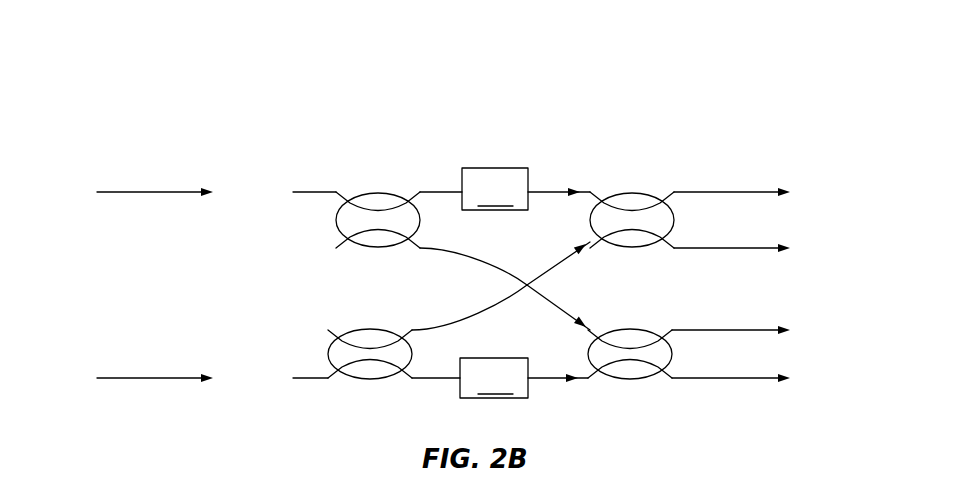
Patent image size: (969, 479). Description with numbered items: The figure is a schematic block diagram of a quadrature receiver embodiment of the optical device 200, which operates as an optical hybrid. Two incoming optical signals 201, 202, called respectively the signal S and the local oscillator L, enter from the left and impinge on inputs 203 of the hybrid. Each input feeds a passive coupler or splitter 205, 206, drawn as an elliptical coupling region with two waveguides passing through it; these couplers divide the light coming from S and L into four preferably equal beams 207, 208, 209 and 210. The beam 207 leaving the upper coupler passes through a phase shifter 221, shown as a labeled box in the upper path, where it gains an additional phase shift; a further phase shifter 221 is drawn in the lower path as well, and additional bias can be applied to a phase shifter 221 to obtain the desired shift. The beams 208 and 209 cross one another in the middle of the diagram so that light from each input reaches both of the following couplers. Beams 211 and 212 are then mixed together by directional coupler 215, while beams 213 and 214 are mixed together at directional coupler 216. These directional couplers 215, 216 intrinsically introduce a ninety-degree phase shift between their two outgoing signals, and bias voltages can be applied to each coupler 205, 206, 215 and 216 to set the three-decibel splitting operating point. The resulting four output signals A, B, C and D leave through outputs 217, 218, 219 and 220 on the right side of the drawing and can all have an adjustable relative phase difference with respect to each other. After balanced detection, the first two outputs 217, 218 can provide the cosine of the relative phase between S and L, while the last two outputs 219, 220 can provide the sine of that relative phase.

The optical device 200 is at (132, 128).
The incoming optical signal S 201 is at (127, 185).
The incoming optical signal L 202 is at (126, 372).
The input 203 is at (288, 286).
The passive coupler 205 is at (378, 208).
The passive coupler 206 is at (366, 369).
The beam 207 is at (429, 178).
The beam 208 is at (458, 266).
The beam 209 is at (458, 307).
The beam 210 is at (427, 394).
The beam 211 is at (559, 180).
The beam 212 is at (557, 260).
The beam 213 is at (557, 316).
The beam 214 is at (558, 393).
The directional coupler 215 is at (632, 209).
The directional coupler 216 is at (630, 370).
The output 217 is at (752, 184).
The output 218 is at (752, 259).
The output 219 is at (752, 324).
The output 220 is at (753, 390).
The phase shifter 221 is at (494, 283).